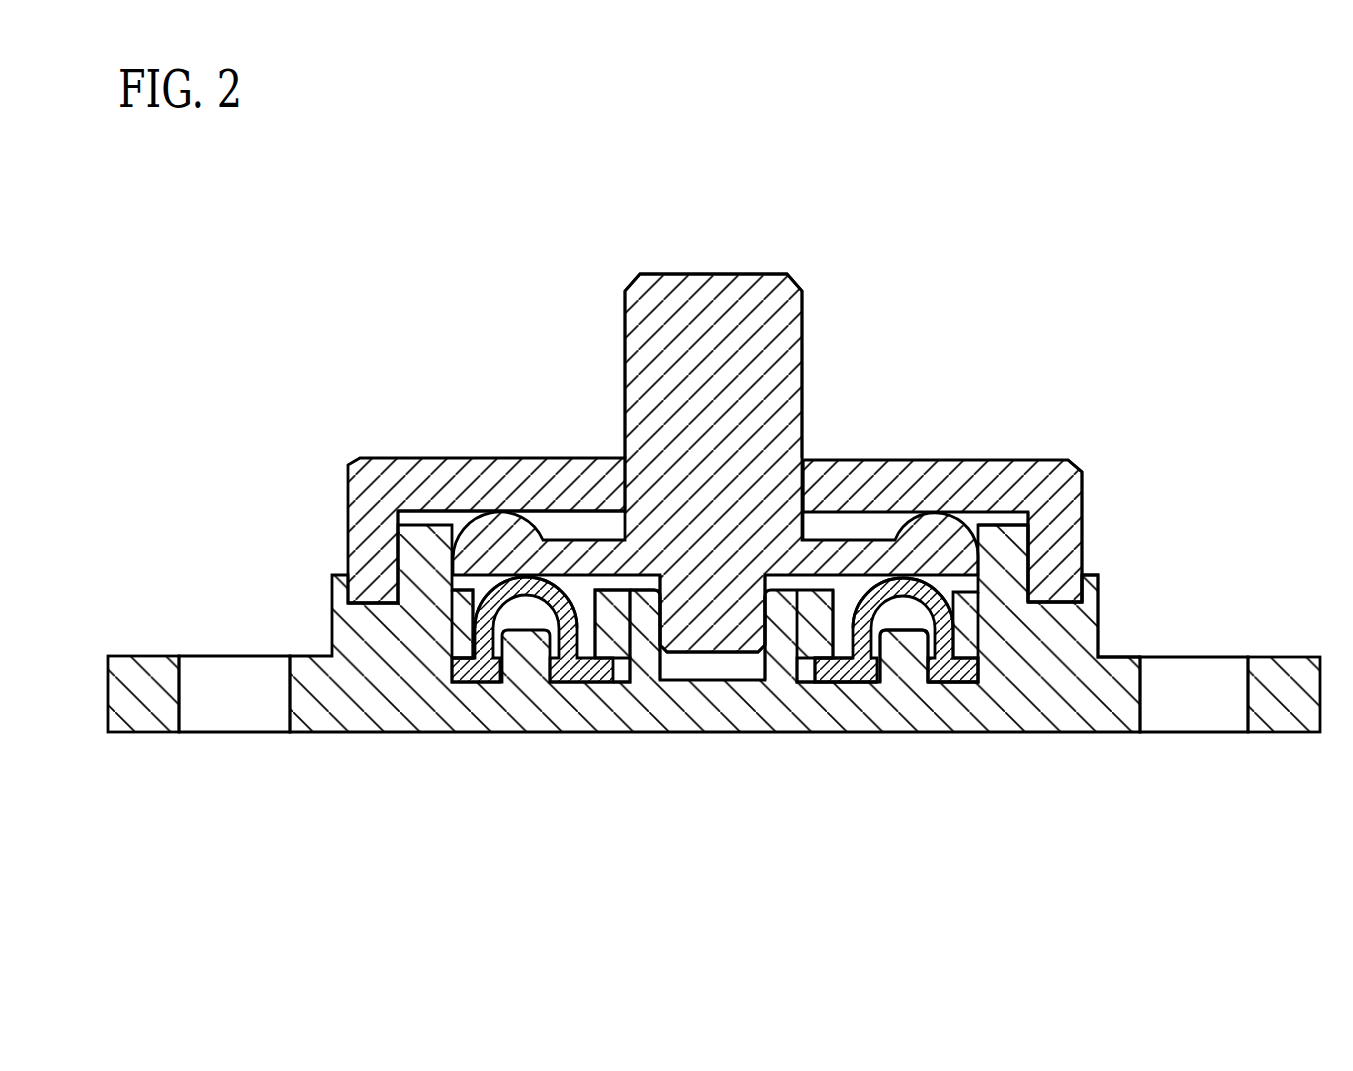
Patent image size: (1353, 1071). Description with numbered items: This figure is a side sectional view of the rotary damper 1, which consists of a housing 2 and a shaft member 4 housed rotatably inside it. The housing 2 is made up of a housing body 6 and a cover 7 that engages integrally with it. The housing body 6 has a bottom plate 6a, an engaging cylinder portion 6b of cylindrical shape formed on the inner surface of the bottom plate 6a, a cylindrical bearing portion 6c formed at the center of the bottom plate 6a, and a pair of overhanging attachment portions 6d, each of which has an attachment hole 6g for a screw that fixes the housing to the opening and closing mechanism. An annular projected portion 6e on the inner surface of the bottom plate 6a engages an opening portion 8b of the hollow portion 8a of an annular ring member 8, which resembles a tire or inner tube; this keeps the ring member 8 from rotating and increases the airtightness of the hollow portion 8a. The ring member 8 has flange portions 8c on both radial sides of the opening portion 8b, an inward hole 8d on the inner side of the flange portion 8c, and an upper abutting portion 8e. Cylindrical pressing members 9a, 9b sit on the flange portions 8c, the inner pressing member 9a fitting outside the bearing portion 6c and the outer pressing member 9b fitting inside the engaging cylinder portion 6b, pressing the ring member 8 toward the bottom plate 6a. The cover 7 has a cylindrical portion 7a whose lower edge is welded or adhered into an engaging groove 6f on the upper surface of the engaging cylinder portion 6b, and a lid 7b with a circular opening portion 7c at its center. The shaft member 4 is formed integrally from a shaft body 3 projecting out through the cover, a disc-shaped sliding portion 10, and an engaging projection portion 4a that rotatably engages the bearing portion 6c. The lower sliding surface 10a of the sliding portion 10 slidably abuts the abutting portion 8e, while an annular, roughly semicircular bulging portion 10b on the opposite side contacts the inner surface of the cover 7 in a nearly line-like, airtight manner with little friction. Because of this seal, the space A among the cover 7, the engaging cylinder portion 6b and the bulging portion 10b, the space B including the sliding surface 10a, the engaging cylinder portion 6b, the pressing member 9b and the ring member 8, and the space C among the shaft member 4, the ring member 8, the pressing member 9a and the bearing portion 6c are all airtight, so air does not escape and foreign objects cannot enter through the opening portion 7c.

The rotary damper 1 is at (1141, 246).
The housing 2 is at (1180, 288).
The shaft body 3 is at (716, 306).
The shaft member 4 is at (806, 455).
The engaging projection portion 4a is at (735, 620).
The housing body 6 is at (1112, 642).
The bottom plate 6a is at (938, 700).
The engaging cylinder portion 6b is at (1103, 651).
The bearing portion 6c is at (786, 655).
The attachment portion 6d is at (148, 712).
The projected portion 6e is at (905, 660).
The engaging groove 6f is at (1068, 595).
The attachment hole 6g is at (287, 694).
The cover 7 is at (1093, 308).
The cylindrical portion 7a is at (1055, 517).
The lid 7b is at (1018, 480).
The opening portion 7c is at (811, 529).
The ring member 8 is at (895, 615).
The hollow portion 8a is at (925, 580).
The opening portion 8b is at (886, 670).
The flange portion 8c is at (803, 668).
The inward hole 8d is at (622, 648).
The abutting portion 8e is at (548, 600).
The pressing member 9a is at (645, 652).
The pressing member 9b is at (452, 632).
The sliding portion 10 is at (565, 555).
The sliding surface 10a is at (463, 595).
The bulging portion 10b is at (470, 585).
The space A is at (1000, 518).
The space B is at (1042, 645).
The space C is at (843, 640).